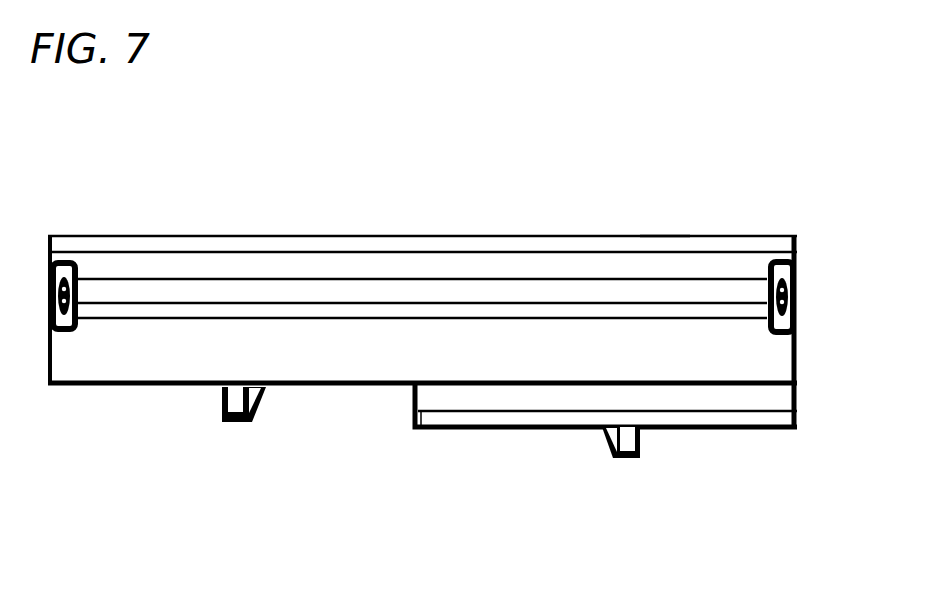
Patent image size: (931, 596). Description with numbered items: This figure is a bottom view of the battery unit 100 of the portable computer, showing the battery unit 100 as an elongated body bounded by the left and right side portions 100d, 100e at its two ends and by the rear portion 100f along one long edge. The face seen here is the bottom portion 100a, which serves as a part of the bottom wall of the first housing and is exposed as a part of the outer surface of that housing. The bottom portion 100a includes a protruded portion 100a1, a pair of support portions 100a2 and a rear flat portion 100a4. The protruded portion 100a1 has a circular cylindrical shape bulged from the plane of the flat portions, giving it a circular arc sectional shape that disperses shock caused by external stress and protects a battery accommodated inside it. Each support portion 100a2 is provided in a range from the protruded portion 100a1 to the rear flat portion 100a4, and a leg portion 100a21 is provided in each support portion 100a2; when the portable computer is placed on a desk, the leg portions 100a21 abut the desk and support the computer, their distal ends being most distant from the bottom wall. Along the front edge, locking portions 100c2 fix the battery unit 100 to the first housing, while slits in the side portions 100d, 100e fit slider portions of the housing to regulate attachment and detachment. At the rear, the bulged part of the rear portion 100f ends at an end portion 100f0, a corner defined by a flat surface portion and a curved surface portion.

The battery unit 100 is at (460, 148).
The bottom portion 100a is at (263, 347).
The protruded portion 100a1 is at (353, 355).
The support portions 100a2 is at (76, 277).
The leg portions 100a21 is at (767, 271).
The rear flat portion 100a4 is at (587, 270).
The locking portions 100c2 is at (228, 423).
The left side portion 100d is at (797, 268).
The right side portion 100e is at (41, 262).
The rear portion 100f is at (414, 235).
The end portion 100f0 is at (658, 235).